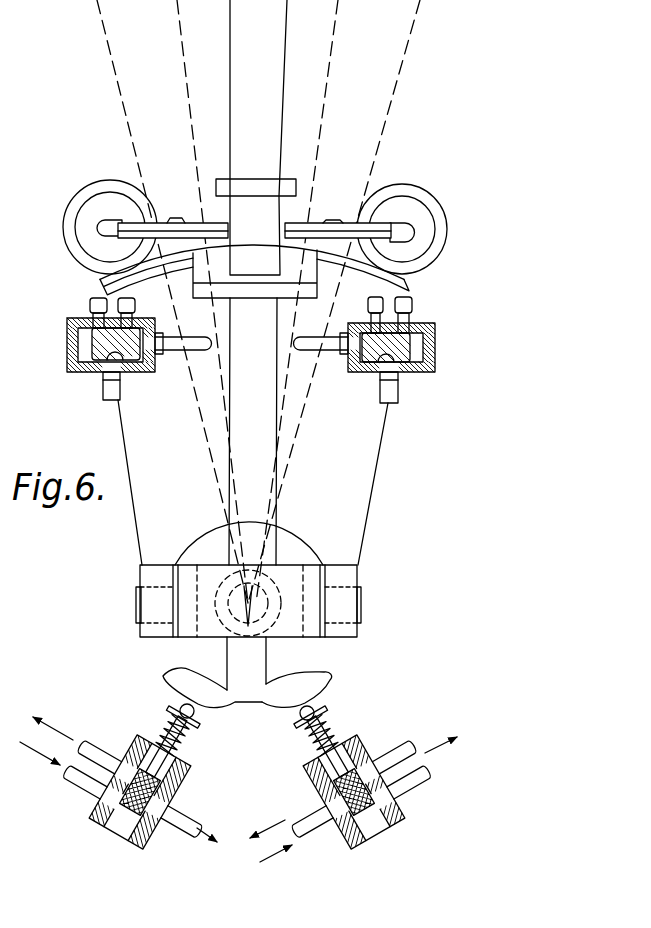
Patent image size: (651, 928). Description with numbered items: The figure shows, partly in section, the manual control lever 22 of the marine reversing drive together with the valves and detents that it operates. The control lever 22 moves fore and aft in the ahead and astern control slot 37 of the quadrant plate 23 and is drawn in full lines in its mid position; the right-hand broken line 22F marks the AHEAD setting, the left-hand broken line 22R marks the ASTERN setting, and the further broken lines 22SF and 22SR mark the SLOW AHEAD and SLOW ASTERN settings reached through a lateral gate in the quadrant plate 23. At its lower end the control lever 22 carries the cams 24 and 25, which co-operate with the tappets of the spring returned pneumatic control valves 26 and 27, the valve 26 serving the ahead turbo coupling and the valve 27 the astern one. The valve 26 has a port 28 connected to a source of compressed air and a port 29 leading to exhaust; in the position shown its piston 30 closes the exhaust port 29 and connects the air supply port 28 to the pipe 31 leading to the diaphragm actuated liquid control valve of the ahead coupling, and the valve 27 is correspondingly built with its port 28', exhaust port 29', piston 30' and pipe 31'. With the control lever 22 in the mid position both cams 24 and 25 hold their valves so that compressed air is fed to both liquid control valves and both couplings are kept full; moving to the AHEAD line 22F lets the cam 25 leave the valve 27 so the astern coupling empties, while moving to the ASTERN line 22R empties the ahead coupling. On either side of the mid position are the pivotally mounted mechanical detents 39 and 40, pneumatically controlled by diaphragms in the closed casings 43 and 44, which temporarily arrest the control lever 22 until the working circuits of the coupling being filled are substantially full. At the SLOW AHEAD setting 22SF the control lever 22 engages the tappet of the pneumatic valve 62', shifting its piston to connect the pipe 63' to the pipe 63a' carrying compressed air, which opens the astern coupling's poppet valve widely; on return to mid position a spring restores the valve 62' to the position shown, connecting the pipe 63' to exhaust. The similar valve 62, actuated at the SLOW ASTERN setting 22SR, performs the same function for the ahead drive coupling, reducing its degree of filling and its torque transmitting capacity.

The manual control lever 22 is at (276, 452).
The astern setting broken line 22R is at (116, 77).
The slow astern setting broken line 22SR is at (181, 25).
The slow ahead setting broken line 22SF is at (334, 34).
The ahead setting broken line 22F is at (398, 82).
The quadrant plate 23 is at (408, 287).
The cam 24 is at (312, 681).
The cam 25 is at (163, 675).
The pneumatic control valve 26 is at (368, 751).
The pneumatic control valve 27 is at (188, 777).
The air supply port 28 is at (346, 818).
The air supply port 28' is at (61, 776).
The exhaust port 29 is at (333, 789).
The exhaust port 29' is at (77, 737).
The piston 30 is at (378, 813).
The piston 30' is at (99, 804).
The pipe 31 is at (375, 787).
The pipe 31' is at (198, 811).
The ahead and astern control slot 37 is at (179, 261).
The mechanical detent 39 is at (377, 227).
The mechanical detent 40 is at (150, 233).
The closed casing 43 is at (446, 217).
The closed casing 44 is at (71, 200).
The pneumatic valve 62 is at (116, 349).
The pneumatic valve 62' is at (394, 345).
The pipe 63' is at (420, 390).
The pipe 63a' is at (436, 309).